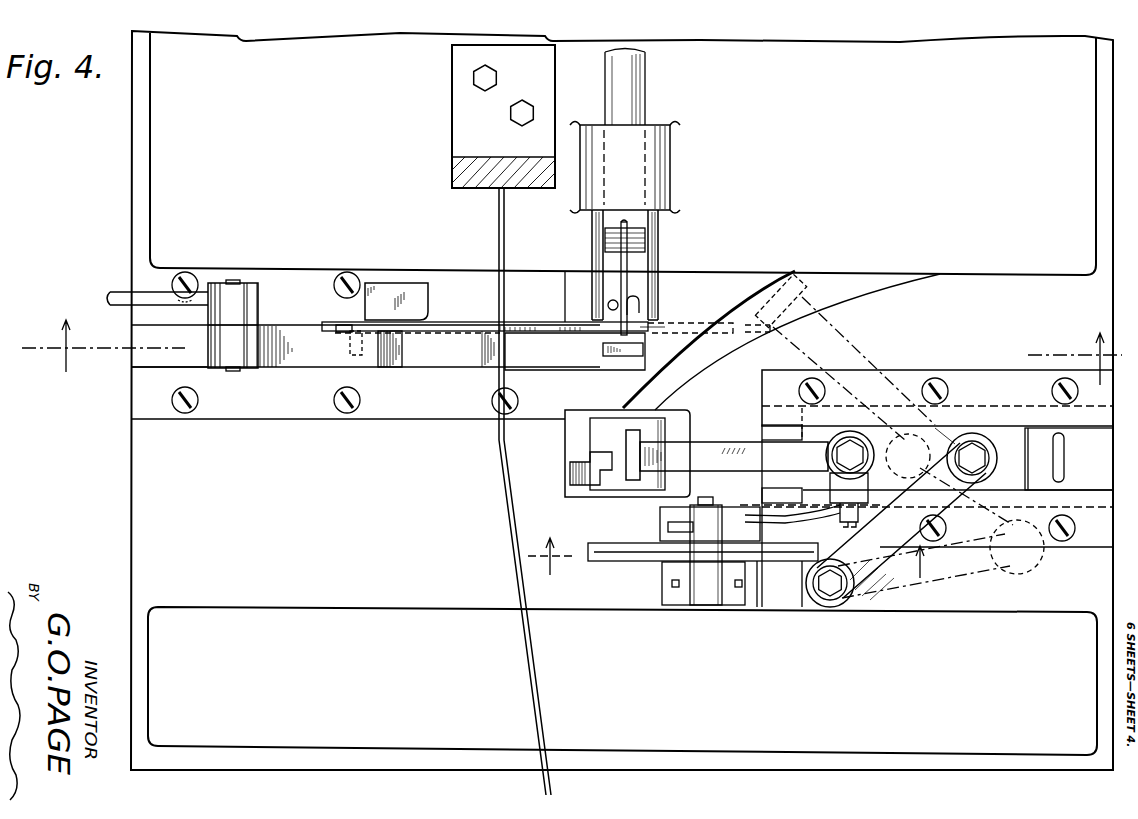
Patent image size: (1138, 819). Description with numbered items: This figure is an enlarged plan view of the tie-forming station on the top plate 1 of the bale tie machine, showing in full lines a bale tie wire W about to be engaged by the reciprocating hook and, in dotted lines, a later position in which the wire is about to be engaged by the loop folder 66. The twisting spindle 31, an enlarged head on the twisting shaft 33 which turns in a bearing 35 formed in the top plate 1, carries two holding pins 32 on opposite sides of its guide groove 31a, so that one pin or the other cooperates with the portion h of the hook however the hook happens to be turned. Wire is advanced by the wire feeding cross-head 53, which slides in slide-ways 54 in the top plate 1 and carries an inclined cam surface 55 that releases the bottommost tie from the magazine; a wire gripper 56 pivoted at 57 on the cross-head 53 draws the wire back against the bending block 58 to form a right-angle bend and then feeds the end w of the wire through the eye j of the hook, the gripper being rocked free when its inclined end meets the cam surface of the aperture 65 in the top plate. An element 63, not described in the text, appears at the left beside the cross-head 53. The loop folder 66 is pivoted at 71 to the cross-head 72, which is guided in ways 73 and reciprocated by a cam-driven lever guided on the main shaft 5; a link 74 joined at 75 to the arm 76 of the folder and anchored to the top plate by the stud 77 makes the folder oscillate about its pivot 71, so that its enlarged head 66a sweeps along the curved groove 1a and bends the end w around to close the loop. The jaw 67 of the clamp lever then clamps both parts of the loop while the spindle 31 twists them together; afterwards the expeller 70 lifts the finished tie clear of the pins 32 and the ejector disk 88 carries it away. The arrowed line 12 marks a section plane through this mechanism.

The top plate 1 is at (622, 400).
The curved groove 1a is at (740, 272).
The main shaft 5 is at (576, 352).
The section line 12 is at (768, 566).
The twisting spindle 31 is at (660, 222).
The guide groove 31a is at (610, 240).
The holding pins 32 is at (630, 282).
The twisting shaft 33 is at (645, 83).
The bearing 35 is at (660, 168).
The wire feeding cross-head 53 is at (282, 360).
The slide-ways 54 is at (215, 385).
The inclined cam surface 55 is at (392, 365).
The wire gripper 56 is at (537, 322).
The gripper pivot 57 is at (350, 337).
The bending block 58 is at (390, 292).
The rod 63 is at (112, 295).
The aperture 65 is at (707, 335).
The loop folder 66 is at (858, 320).
The enlarged head of loop folder 66a is at (632, 438).
The jaw of clamp lever 67 is at (600, 488).
The expeller 70 is at (603, 350).
The pivot bolt 71 is at (838, 457).
The reciprocating cross-head 72 is at (878, 432).
The ways 73 is at (1093, 432).
The link 74 is at (963, 592).
The link connection 75 is at (990, 430).
The arm of loop folder 76 is at (935, 430).
The stud 77 is at (818, 583).
The ejector disk 88 is at (640, 522).
The portion of hook h is at (644, 303).
The eye of hook j is at (650, 330).
The end of wire w is at (498, 197).
The bale tie wire W is at (530, 690).